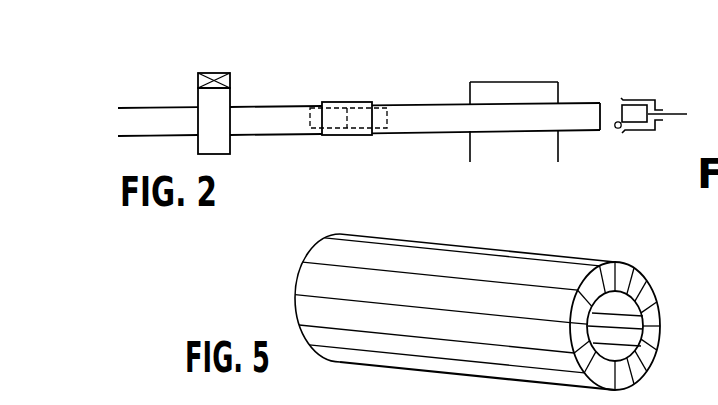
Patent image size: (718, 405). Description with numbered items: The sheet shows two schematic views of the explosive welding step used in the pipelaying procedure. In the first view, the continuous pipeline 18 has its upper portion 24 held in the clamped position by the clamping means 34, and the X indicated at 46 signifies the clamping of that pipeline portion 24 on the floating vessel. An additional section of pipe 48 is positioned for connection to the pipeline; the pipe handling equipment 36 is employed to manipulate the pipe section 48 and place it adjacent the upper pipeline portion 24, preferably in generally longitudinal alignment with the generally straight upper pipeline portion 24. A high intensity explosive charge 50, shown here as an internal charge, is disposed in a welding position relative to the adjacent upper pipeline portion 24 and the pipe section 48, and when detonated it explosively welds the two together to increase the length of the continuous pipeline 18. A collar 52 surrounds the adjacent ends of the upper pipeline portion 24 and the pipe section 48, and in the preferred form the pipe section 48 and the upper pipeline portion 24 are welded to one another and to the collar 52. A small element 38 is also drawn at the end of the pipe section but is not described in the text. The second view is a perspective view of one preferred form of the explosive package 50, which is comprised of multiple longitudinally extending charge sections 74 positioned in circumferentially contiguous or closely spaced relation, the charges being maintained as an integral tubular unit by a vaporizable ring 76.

In FIG. 2, the continuous pipeline 18 is at (138, 112).
In FIG. 2, the upper portion of the continuous pipeline 24 is at (169, 100).
In FIG. 2, the X signifying clamping 46 is at (213, 73).
In FIG. 2, the clamping means 34 is at (238, 100).
In FIG. 2, the pipe section 48 is at (429, 97).
In FIG. 2, the explosive charge 50 is at (299, 117).
In FIG. 5, the explosive charge 50 is at (404, 232).
In FIG. 2, the collar 52 is at (358, 101).
In FIG. 2, the pipe handling equipment 36 is at (552, 74).
In FIG. 2, the connector 38 is at (664, 98).
In FIG. 5, the charge sections 74 is at (596, 273).
In FIG. 5, the vaporizable ring 76 is at (647, 320).